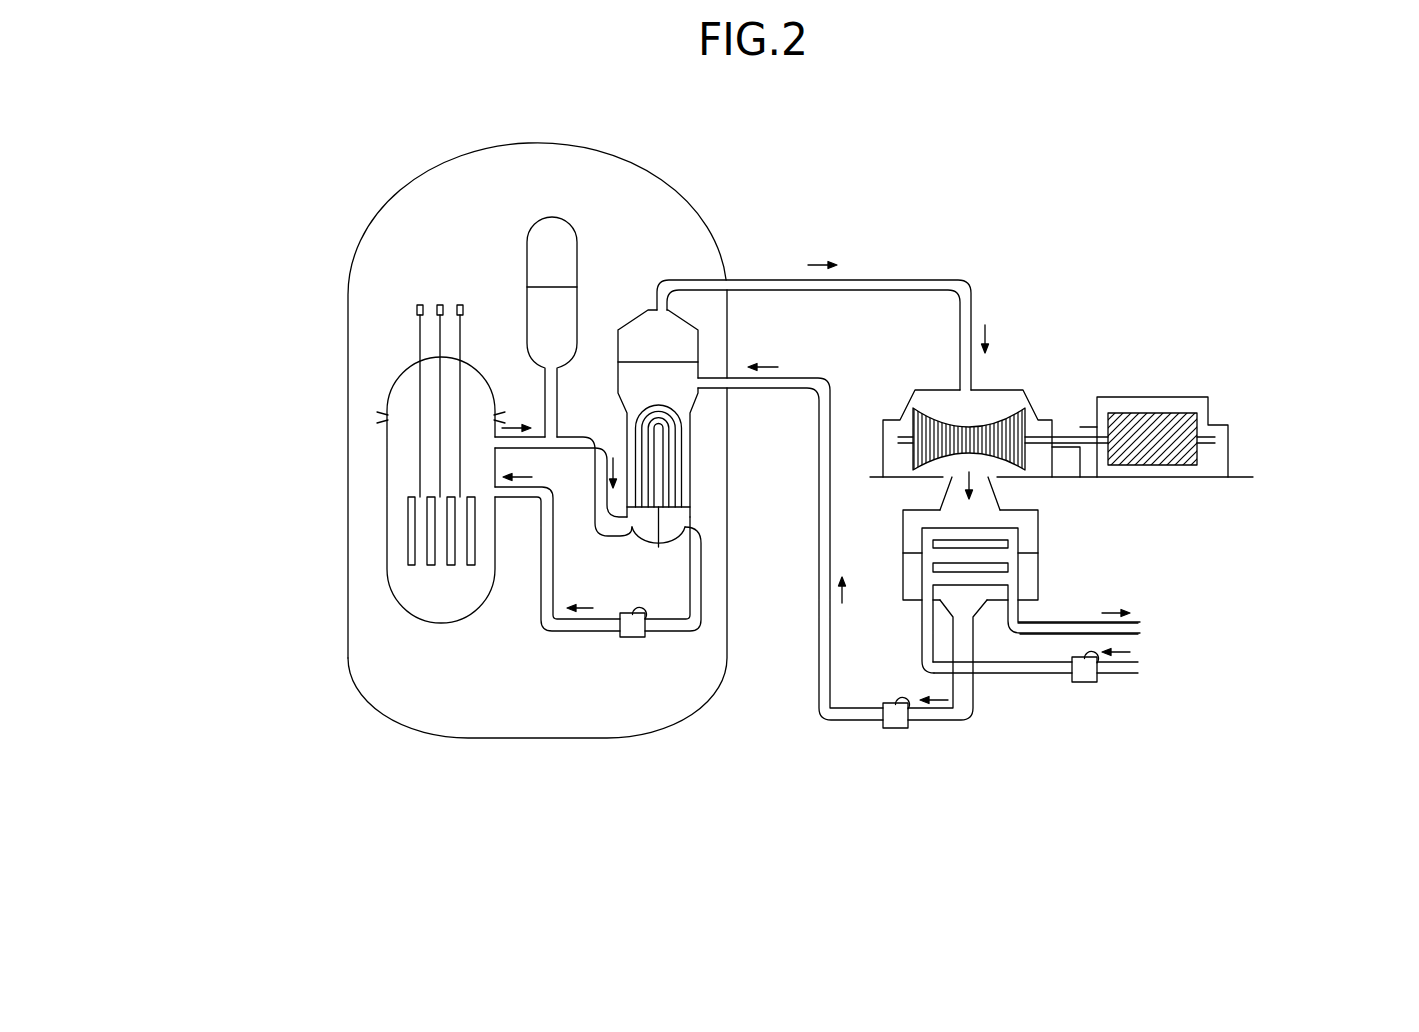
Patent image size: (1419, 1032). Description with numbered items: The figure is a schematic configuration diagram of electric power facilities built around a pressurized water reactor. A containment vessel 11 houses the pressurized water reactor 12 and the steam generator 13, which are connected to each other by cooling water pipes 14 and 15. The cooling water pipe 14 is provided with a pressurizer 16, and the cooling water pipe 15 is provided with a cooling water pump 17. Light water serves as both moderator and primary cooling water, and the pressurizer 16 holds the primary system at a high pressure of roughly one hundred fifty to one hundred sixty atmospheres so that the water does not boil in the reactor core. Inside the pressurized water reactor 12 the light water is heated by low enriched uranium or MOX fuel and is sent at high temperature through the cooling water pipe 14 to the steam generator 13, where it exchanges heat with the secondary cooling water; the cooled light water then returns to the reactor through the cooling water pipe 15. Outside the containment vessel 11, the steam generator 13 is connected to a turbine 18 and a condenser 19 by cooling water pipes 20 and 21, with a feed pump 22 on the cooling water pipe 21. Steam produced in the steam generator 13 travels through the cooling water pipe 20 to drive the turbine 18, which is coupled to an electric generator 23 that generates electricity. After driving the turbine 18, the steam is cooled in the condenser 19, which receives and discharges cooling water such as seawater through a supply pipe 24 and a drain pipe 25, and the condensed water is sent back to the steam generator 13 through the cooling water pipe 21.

The containment vessel 11 is at (432, 163).
The pressurized water reactor 12 is at (386, 380).
The steam generator 13 is at (638, 314).
The cooling water pipe 14 is at (581, 436).
The cooling water pipe 15 is at (565, 633).
The pressurizer 16 is at (527, 240).
The cooling water pump 17 is at (635, 638).
The turbine 18 is at (1040, 381).
The condenser 19 is at (1051, 538).
The cooling water pipe 20 is at (957, 277).
The cooling water pipe 21 is at (818, 698).
The feed pump 22 is at (893, 730).
The electric generator 23 is at (1225, 391).
The supply pipe 24 is at (1018, 675).
The drain pipe 25 is at (1058, 622).